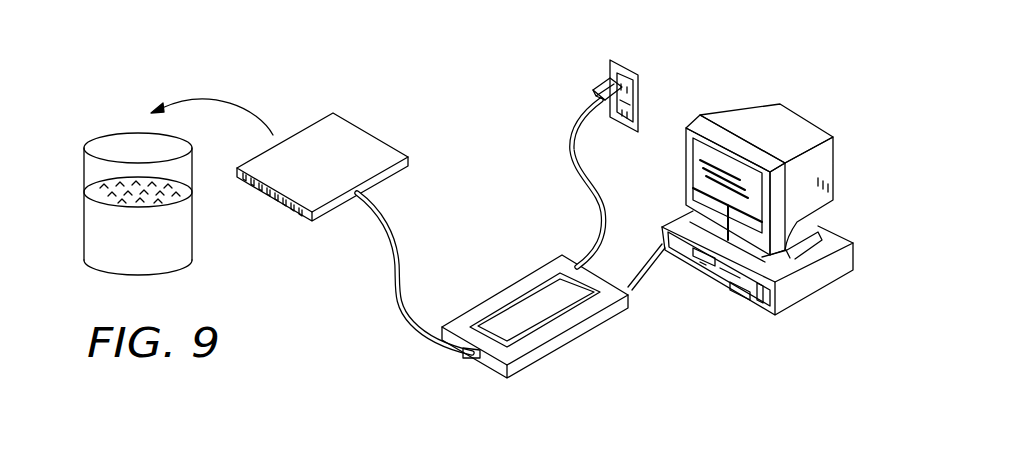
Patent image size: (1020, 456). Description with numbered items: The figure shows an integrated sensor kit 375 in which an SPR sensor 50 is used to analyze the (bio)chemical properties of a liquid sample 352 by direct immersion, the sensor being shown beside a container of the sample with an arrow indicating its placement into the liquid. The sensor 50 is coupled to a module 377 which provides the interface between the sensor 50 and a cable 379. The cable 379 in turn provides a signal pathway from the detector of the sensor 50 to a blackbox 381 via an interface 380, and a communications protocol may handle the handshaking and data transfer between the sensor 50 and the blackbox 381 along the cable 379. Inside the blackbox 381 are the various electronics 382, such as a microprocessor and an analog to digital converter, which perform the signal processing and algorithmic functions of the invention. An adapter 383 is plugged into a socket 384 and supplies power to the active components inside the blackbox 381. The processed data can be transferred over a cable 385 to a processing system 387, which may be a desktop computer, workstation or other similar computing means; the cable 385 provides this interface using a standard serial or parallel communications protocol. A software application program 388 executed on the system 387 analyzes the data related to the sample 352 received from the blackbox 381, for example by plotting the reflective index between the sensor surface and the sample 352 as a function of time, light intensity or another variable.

The integrated sensor kit 375 is at (420, 64).
The SPR sensor 50 is at (317, 132).
The liquid sample 352 is at (84, 232).
The module 377 is at (295, 214).
The cable 379 is at (400, 226).
The interface 380 is at (460, 360).
The blackbox 381 is at (593, 325).
The electronics 382 is at (537, 307).
The adapter 383 is at (592, 92).
The socket 384 is at (640, 82).
The cable 385 is at (648, 270).
The processing system 387 is at (826, 290).
The software application program 388 is at (694, 162).